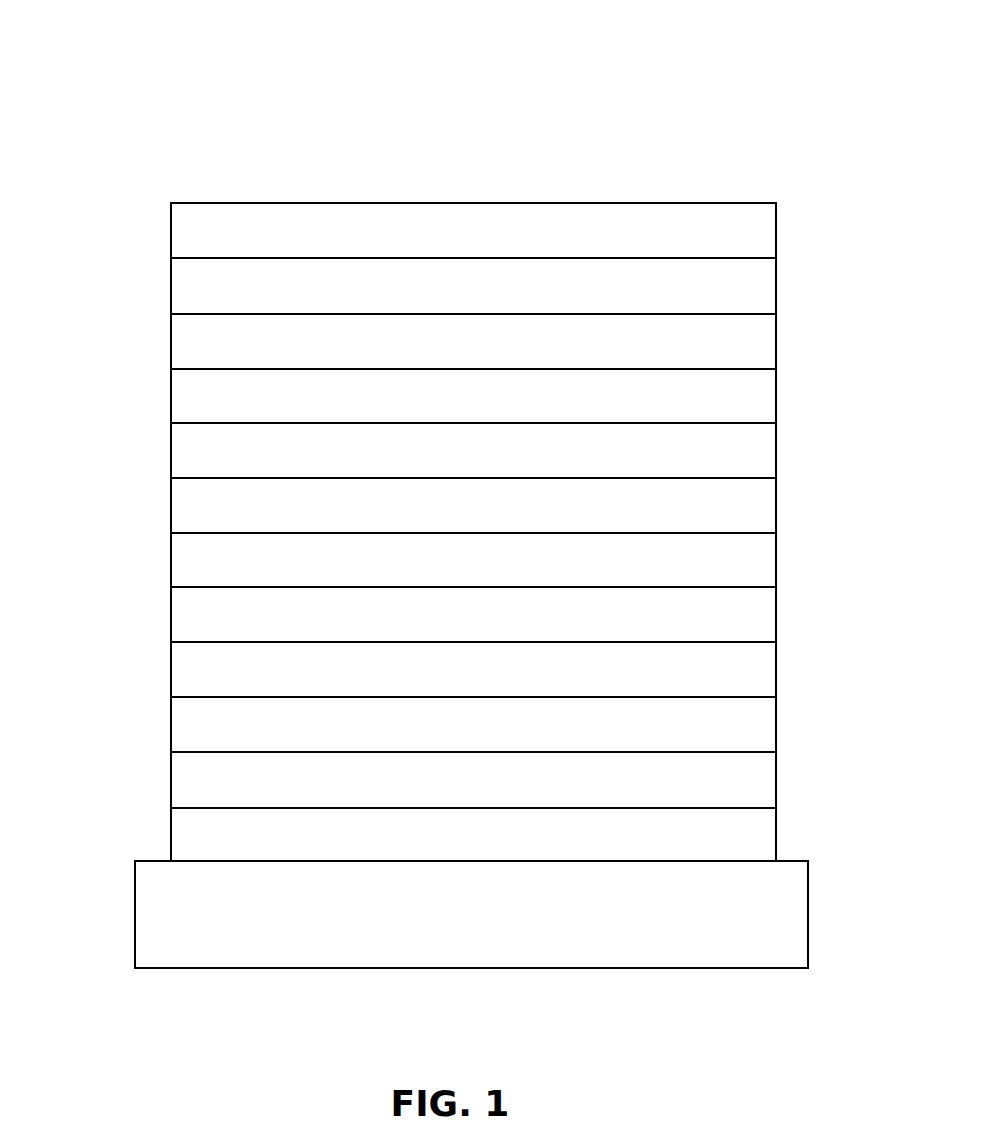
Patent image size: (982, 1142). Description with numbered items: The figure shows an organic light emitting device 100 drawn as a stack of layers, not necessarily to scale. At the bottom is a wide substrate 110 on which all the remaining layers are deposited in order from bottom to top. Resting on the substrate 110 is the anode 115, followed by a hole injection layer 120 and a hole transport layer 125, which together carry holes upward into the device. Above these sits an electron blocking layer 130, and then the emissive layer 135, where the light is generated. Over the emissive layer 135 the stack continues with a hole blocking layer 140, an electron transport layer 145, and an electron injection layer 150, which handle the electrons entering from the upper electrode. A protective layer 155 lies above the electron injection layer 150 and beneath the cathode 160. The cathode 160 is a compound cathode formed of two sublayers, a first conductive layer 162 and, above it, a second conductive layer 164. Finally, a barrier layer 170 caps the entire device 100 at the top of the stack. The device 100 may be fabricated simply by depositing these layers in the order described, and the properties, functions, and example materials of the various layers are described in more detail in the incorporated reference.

The organic light emitting device 100 is at (314, 157).
The substrate 110 is at (428, 968).
The anode 115 is at (170, 833).
The hole injection layer 120 is at (170, 780).
The hole transport layer 125 is at (170, 724).
The electron blocking layer 130 is at (170, 670).
The emissive layer 135 is at (170, 616).
The hole blocking layer 140 is at (170, 562).
The electron transport layer 145 is at (170, 508).
The electron injection layer 150 is at (170, 452).
The protective layer 155 is at (170, 398).
The cathode 160 is at (469, 313).
The first conductive layer 162 is at (777, 340).
The second conductive layer 164 is at (777, 283).
The barrier layer 170 is at (170, 232).